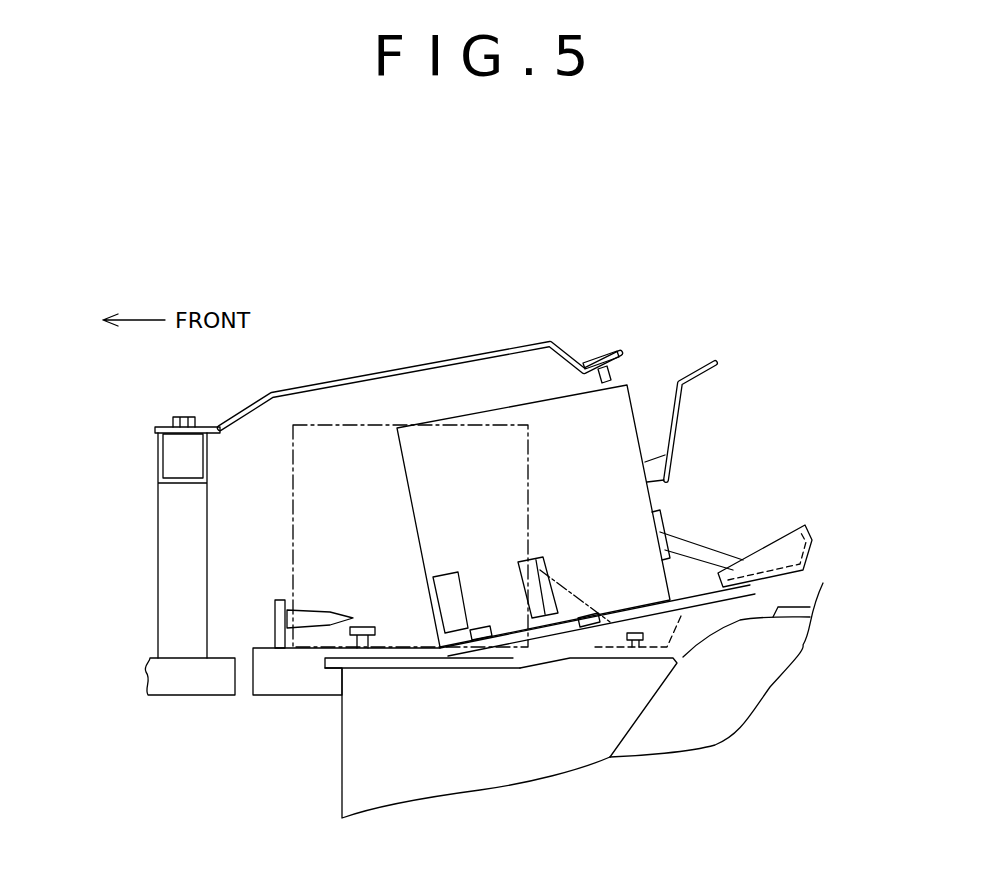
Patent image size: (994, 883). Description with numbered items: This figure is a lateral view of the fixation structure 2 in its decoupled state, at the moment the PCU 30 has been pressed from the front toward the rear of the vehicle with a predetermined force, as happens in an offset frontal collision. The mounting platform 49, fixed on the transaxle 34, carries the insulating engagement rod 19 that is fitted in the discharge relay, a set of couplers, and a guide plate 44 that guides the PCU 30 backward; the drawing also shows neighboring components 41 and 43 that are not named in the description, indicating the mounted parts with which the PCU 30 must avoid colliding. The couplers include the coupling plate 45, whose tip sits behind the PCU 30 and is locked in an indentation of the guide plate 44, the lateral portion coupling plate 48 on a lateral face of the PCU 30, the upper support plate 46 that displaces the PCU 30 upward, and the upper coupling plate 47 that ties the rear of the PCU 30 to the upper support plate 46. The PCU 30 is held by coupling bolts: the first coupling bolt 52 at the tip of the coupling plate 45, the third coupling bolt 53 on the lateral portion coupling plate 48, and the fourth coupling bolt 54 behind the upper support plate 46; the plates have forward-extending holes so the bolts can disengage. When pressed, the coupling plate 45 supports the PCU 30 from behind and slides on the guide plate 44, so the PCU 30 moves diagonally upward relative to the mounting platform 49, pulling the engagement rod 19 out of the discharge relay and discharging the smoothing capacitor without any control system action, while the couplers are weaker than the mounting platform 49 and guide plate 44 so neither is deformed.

The fixation structure 2 is at (437, 258).
The insulating engagement rod 19 is at (313, 610).
The PCU 30 is at (633, 400).
The transaxle 34 is at (342, 790).
The radiator support 41 is at (158, 515).
The wheel house 43 is at (707, 715).
The guide plate 44 is at (750, 588).
The coupling plate 45 is at (705, 538).
The upper support plate 46 is at (493, 350).
The upper coupling plate 47 is at (677, 433).
The lateral portion coupling plate 48 is at (443, 573).
The mounting platform 49 is at (267, 642).
The first coupling bolt 52 is at (635, 647).
The third coupling bolt 53 is at (368, 620).
The fourth coupling bolt 54 is at (600, 343).